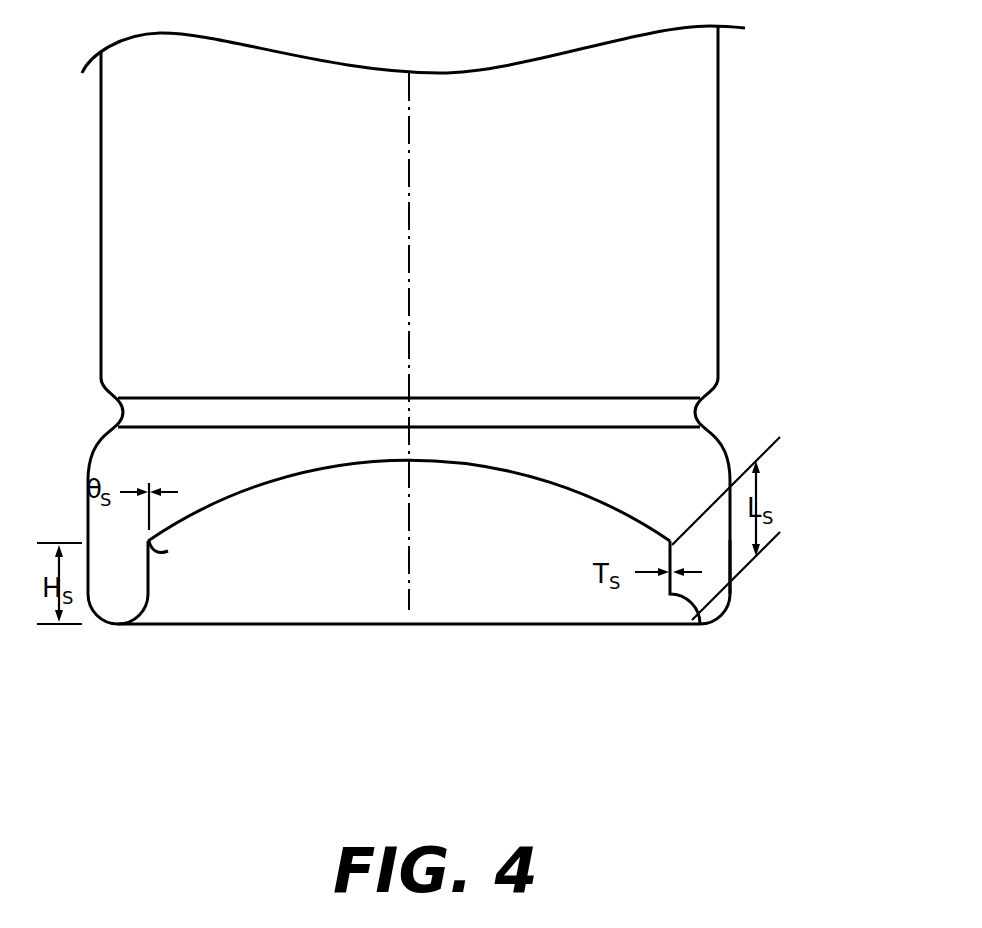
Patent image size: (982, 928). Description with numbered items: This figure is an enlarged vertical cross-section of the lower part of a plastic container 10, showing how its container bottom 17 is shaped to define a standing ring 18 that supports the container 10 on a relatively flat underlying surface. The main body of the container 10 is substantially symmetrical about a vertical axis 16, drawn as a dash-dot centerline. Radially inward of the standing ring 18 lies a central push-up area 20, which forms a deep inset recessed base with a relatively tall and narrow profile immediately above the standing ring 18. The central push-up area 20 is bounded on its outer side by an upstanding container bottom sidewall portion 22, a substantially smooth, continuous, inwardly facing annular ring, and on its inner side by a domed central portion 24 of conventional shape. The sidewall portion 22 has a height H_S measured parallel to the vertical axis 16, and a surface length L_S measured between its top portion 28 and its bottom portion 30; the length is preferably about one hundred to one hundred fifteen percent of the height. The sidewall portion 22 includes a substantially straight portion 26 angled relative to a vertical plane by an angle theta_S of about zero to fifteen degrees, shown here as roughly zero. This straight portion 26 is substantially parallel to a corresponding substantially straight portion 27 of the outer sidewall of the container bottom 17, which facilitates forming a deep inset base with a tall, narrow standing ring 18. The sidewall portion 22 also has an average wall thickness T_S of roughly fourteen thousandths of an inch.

The plastic container 10 is at (773, 338).
The vertical axis 16 is at (409, 290).
The container bottom 17 is at (806, 497).
The standing ring 18 is at (693, 624).
The central push-up area 20 is at (342, 645).
The upstanding container bottom sidewall portion 22 is at (156, 587).
The central portion 24 is at (467, 468).
The substantially straight portion 26 is at (670, 612).
The substantially straight portion of outer sidewall 27 is at (730, 593).
The top portion 28 is at (168, 551).
The bottom portion 30 is at (125, 625).